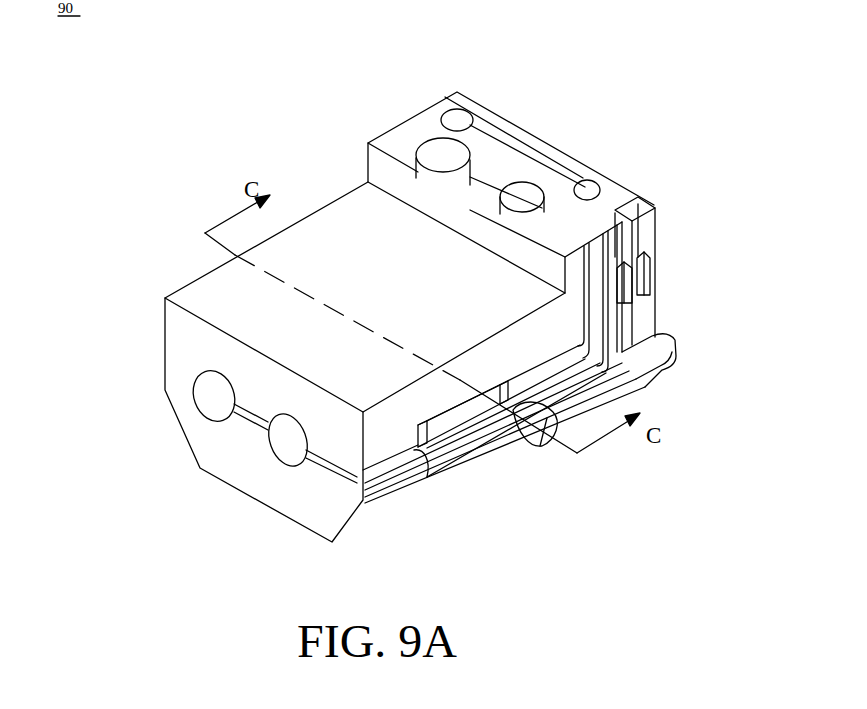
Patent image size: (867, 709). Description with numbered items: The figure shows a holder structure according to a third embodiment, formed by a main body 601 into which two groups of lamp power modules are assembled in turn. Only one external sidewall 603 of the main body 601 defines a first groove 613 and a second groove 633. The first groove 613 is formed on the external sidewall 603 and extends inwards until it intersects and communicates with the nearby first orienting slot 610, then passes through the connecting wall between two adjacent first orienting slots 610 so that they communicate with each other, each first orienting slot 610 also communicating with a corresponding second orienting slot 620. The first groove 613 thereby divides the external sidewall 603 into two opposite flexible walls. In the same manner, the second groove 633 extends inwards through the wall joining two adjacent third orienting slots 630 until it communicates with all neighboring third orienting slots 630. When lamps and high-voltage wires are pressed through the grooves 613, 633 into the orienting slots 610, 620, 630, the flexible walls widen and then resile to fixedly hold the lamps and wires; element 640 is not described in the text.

The main body 601 is at (322, 254).
The external sidewall 603 is at (545, 446).
The first orienting slot 610 is at (283, 437).
The first groove 613 is at (472, 172).
The second orienting slot 620 is at (470, 180).
The third orienting slot 630 is at (580, 185).
The second groove 633 is at (615, 212).
The latches 640 is at (650, 276).